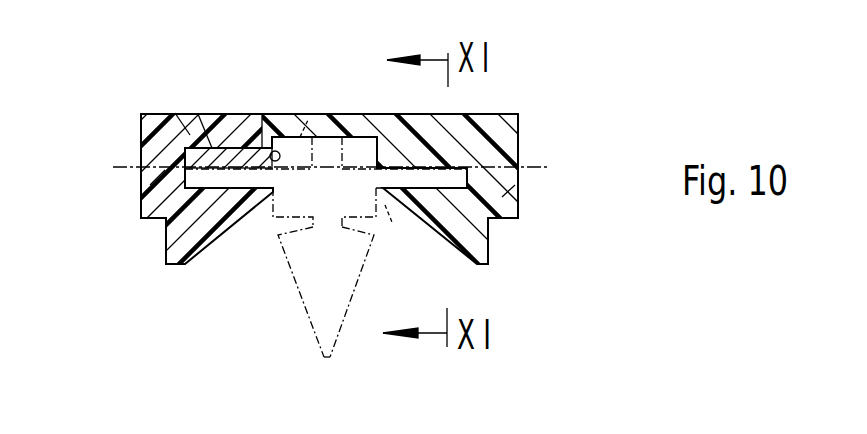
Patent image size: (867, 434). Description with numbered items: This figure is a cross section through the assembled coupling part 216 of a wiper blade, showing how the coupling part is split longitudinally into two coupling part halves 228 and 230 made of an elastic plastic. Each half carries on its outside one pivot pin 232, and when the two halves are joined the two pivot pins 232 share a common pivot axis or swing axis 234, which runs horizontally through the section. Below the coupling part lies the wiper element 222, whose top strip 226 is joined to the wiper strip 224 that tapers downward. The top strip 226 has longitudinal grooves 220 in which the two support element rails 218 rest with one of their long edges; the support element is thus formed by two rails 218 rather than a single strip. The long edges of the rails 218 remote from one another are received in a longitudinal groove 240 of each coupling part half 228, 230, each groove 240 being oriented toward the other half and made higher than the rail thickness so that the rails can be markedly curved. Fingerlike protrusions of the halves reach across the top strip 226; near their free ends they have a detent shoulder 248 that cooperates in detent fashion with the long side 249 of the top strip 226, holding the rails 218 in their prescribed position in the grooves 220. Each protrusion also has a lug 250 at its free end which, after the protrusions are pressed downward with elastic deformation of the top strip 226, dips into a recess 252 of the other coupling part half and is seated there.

The coupling part 216 is at (471, 112).
The support element rail 218 is at (343, 137).
The longitudinal groove 220 is at (288, 135).
The wiper element 222 is at (274, 226).
The wiper strip 224 is at (305, 288).
The top strip 226 is at (308, 120).
The coupling part half 228 is at (519, 122).
The coupling part half 230 is at (141, 128).
The pivot pin 232 is at (150, 185).
The pivot axis 234 is at (528, 165).
The longitudinal groove 240 is at (215, 200).
The detent shoulder 248 is at (252, 150).
The long side 249 is at (274, 151).
The lug 250 is at (198, 114).
The recess 252 is at (175, 113).